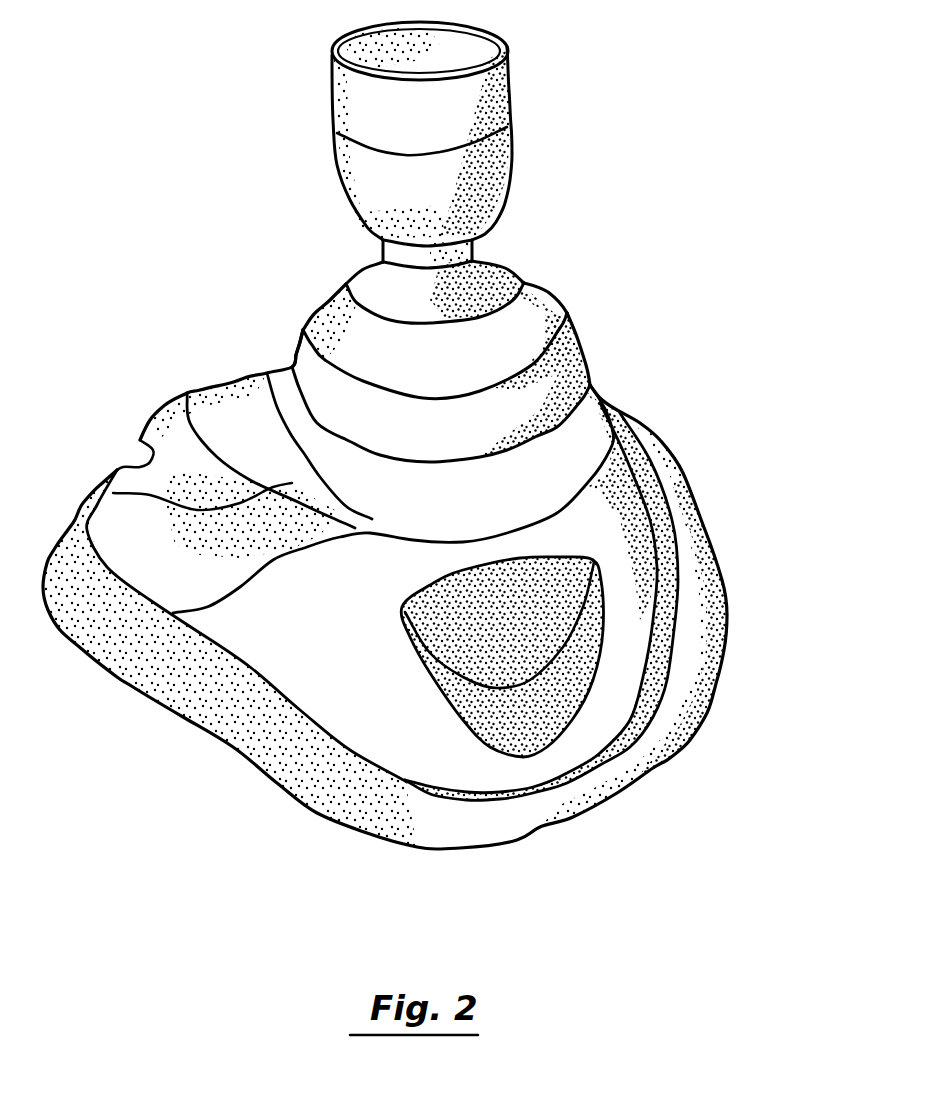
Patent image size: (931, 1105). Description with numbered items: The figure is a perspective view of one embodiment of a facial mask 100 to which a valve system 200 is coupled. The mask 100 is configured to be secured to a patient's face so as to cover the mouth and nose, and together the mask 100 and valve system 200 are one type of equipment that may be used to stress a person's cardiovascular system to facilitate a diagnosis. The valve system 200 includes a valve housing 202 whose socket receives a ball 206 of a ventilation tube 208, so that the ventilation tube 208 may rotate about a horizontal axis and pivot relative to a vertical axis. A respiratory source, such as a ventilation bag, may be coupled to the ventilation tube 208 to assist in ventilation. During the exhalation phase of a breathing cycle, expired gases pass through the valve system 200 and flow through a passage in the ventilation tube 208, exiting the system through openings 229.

The facial mask 100 is at (636, 747).
The valve system 200 is at (543, 287).
The valve housing 202 is at (572, 377).
The ball 206 is at (500, 260).
The ventilation tube 208 is at (487, 113).
The openings 229 is at (381, 242).